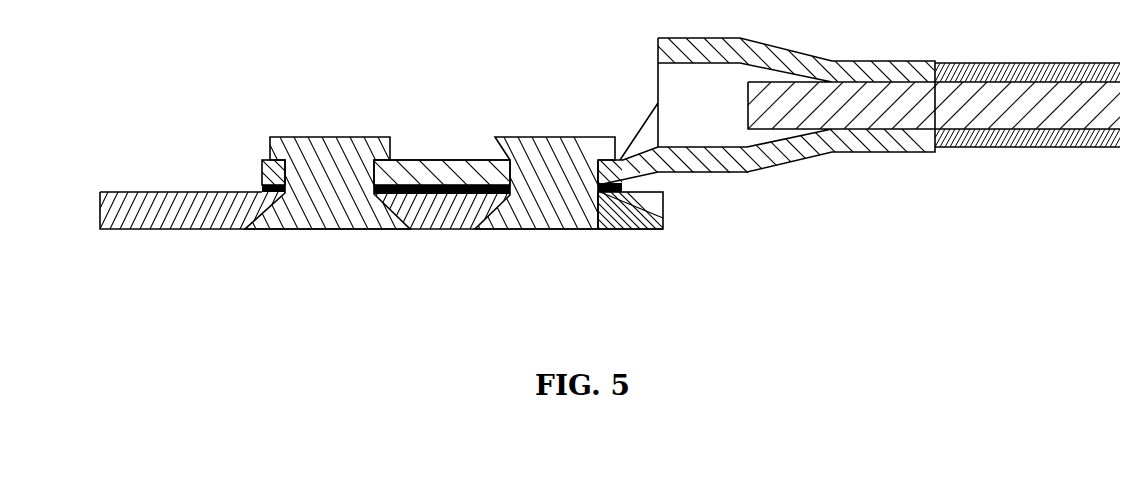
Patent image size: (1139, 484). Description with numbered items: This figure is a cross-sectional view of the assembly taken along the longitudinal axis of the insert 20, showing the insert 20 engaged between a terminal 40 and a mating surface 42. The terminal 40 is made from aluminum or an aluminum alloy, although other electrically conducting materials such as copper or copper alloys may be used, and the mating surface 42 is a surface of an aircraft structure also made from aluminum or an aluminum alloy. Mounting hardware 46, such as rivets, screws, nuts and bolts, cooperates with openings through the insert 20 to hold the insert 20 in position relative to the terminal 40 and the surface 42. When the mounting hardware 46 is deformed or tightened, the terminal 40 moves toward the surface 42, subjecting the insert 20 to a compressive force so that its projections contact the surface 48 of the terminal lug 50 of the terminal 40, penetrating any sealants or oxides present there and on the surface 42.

The insert 20 is at (643, 208).
The terminal 40 is at (447, 142).
The mating surface 42 is at (180, 252).
The mounting hardware 46 is at (330, 230).
The surface of the terminal lug 48 is at (443, 194).
The terminal lug 50 is at (412, 160).